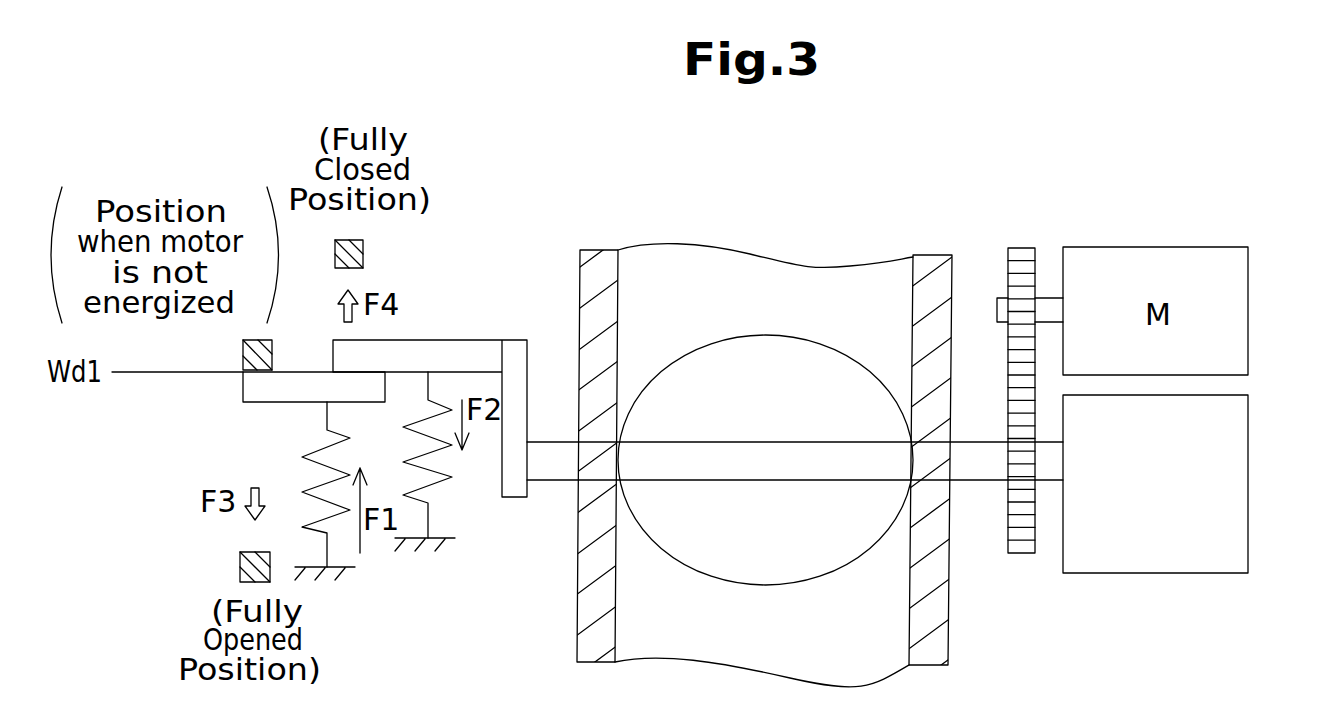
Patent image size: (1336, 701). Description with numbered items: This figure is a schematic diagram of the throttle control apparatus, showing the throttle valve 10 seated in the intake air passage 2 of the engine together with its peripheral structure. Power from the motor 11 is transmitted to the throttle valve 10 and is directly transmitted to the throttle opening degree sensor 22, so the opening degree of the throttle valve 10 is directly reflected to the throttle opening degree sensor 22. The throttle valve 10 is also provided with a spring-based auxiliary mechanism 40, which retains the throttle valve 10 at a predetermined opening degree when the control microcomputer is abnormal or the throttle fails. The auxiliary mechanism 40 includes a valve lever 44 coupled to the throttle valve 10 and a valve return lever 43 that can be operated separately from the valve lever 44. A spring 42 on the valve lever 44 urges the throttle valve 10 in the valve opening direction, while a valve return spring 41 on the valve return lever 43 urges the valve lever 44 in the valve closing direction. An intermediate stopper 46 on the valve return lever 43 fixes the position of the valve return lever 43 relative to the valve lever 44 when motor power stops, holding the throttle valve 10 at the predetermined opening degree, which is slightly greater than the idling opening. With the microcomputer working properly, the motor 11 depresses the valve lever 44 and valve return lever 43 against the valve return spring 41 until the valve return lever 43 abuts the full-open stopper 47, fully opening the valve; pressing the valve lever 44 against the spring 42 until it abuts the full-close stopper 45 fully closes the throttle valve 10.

The intake air passage 2 is at (948, 630).
The throttle valve 10 is at (843, 551).
The motor 11 is at (1235, 357).
The throttle opening degree sensor 22 is at (1235, 557).
The auxiliary mechanism 40 is at (416, 621).
The valve return spring 41 is at (327, 441).
The spring 42 is at (455, 478).
The valve return lever 43 is at (260, 417).
The valve lever 44 is at (445, 340).
The full-close stopper 45 is at (363, 250).
The intermediate stopper 46 is at (243, 349).
The full-open stopper 47 is at (240, 562).